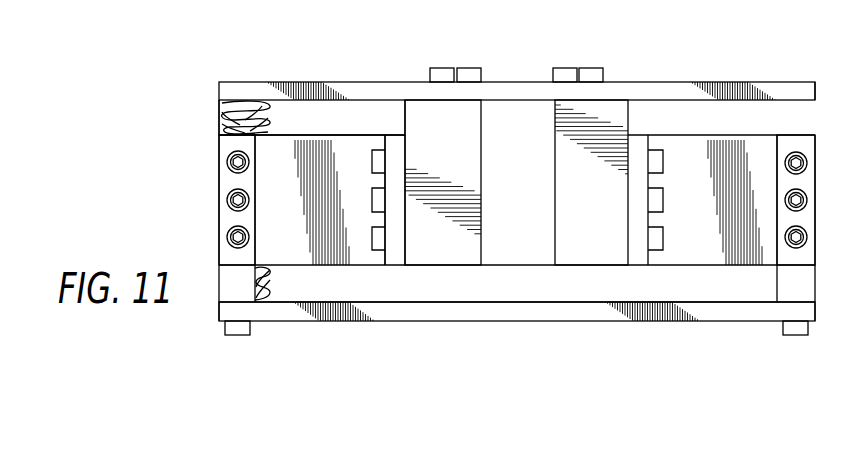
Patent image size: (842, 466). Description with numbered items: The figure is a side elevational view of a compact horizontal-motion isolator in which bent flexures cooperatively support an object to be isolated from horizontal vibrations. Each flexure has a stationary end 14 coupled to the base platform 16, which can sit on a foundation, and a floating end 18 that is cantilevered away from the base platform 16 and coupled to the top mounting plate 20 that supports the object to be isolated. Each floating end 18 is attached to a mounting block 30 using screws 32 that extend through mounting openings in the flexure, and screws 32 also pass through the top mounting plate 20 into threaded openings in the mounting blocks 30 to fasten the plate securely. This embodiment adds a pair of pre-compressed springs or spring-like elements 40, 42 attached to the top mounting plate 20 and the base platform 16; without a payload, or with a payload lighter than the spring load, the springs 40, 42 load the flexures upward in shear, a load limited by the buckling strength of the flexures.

The stationary end 14 is at (255, 223).
The base platform 16 is at (403, 322).
The floating end 18 is at (406, 145).
The top mounting plate 20 is at (338, 82).
The mounting block 30 is at (432, 232).
The screws 32 is at (470, 68).
The pre-compressed spring 40 is at (272, 110).
The pre-compressed spring 42 is at (220, 122).